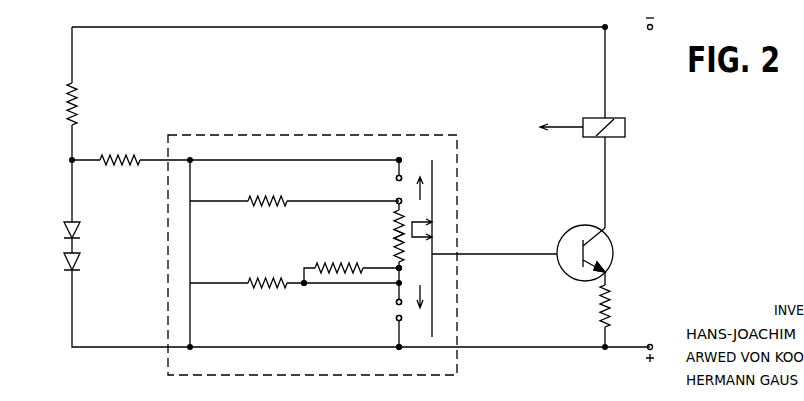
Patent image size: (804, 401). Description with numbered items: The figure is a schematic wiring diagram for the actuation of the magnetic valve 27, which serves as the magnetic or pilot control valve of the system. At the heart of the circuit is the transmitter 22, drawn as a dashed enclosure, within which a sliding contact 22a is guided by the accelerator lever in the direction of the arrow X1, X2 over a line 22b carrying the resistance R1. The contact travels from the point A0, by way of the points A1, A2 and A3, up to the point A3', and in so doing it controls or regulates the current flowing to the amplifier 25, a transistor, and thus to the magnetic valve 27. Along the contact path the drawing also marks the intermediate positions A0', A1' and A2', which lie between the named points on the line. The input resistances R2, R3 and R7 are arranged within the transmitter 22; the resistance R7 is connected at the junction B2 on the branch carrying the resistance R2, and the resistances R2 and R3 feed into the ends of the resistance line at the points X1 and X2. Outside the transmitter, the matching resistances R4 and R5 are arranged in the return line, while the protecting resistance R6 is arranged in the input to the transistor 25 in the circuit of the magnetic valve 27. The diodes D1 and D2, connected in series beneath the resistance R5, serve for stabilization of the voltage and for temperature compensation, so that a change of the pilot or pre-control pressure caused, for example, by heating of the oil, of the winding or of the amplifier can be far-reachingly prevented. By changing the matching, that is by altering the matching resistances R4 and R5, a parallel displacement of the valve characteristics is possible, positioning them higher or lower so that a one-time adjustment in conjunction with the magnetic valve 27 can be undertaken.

The transmitter 22 is at (166, 370).
The sliding contact 22a is at (420, 231).
The line 22b is at (396, 227).
The amplifier 25 is at (608, 240).
The magnetic valve 27 is at (625, 127).
The resistance R1 is at (396, 240).
The input resistance R2 is at (267, 298).
The input resistance R3 is at (267, 215).
The matching resistance R4 is at (120, 149).
The matching resistance R5 is at (84, 104).
The protecting resistance R6 is at (619, 306).
The input resistance R7 is at (333, 275).
The diode D1 is at (84, 232).
The diode D2 is at (84, 263).
The node B2 is at (303, 280).
The direction of arrow X1 is at (409, 275).
The direction of arrow X2 is at (409, 166).
The point A0 is at (412, 355).
The contact A0' is at (367, 329).
The point A1 is at (413, 323).
The contact A1' is at (381, 305).
The point A2 is at (416, 257).
The contact A2' is at (374, 189).
The point A3 is at (385, 187).
The point A3' is at (393, 134).